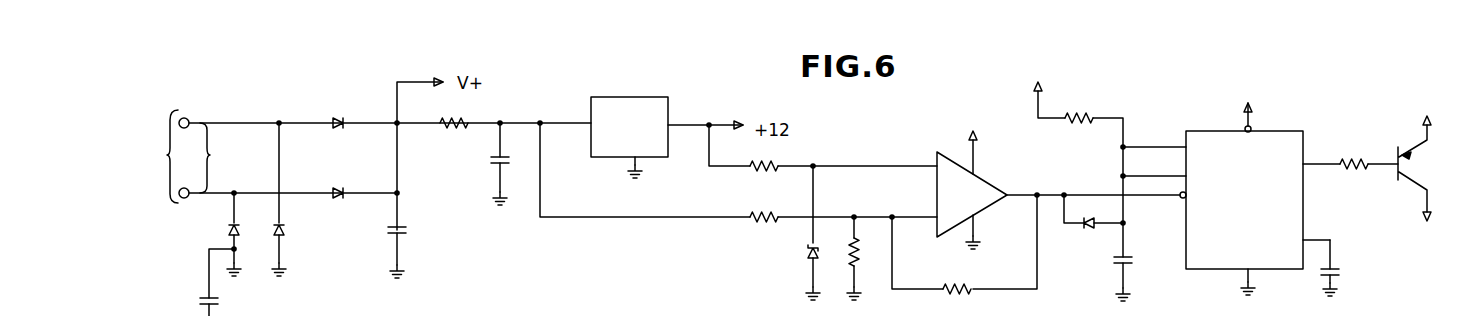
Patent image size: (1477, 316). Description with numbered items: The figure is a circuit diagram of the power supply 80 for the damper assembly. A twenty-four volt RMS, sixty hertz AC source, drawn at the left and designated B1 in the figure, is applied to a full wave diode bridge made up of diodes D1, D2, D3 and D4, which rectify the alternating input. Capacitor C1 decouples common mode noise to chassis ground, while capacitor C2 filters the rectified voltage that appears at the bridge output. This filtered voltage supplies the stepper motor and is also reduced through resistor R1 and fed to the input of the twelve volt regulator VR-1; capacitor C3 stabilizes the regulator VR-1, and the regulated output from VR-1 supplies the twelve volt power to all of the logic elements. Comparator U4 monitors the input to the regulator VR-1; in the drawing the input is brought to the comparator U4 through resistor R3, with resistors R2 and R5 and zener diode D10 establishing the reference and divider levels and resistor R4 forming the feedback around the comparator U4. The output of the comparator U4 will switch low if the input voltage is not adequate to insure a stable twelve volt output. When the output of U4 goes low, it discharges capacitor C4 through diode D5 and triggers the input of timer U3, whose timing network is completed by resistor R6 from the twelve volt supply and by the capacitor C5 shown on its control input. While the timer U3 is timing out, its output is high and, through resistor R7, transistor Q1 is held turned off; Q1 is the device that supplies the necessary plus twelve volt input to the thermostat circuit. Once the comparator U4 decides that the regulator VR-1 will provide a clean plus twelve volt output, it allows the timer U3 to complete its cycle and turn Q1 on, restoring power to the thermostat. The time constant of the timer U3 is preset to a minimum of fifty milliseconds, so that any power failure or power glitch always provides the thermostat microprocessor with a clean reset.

The power supply 80 is at (467, 225).
The bridge rectifier / 24V AC input B1 is at (159, 156).
The full wave diode bridge diode D1 is at (224, 248).
The full wave diode bridge diode D2 is at (294, 248).
The full wave diode bridge diode D3 is at (337, 115).
The full wave diode bridge diode D4 is at (337, 185).
The diode D5 is at (1093, 222).
The zener diode D10 is at (795, 272).
The capacitor C1 is at (205, 282).
The capacitor C2 is at (411, 250).
The capacitor C3 is at (485, 177).
The capacitor C4 is at (1141, 275).
The capacitor C5 is at (1343, 268).
The resistor R1 is at (454, 115).
The resistor R2 is at (764, 159).
The resistor R3 is at (764, 210).
The resistor R4 is at (964, 243).
The resistor R5 is at (866, 257).
The resistor R6 is at (1073, 161).
The resistor R7 is at (1368, 155).
The 12 volt regulator VR-1 is at (629, 137).
The comparator U4 is at (991, 187).
The timer U3 is at (1202, 199).
The transistor Q1 is at (1417, 181).